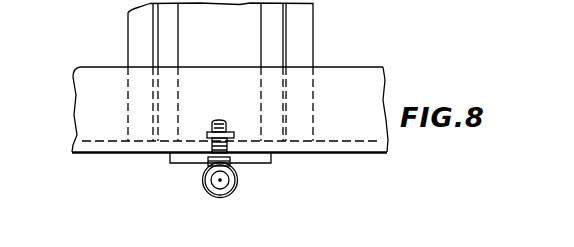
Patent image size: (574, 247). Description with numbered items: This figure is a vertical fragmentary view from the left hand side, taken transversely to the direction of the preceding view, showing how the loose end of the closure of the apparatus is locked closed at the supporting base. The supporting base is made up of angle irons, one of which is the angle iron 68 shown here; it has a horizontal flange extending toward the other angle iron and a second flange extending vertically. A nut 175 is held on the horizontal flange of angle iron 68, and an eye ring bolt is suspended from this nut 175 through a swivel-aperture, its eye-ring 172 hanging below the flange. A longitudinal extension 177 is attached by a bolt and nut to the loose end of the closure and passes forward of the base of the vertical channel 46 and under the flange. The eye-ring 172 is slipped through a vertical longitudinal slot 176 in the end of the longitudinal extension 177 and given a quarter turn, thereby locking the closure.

The vertical channel 46 is at (121, 40).
The angle iron 68 is at (396, 34).
The eye-ring 172 is at (232, 194).
The nut 175 is at (229, 128).
The vertical longitudinal slot 176 is at (198, 167).
The longitudinal extension 177 is at (262, 163).